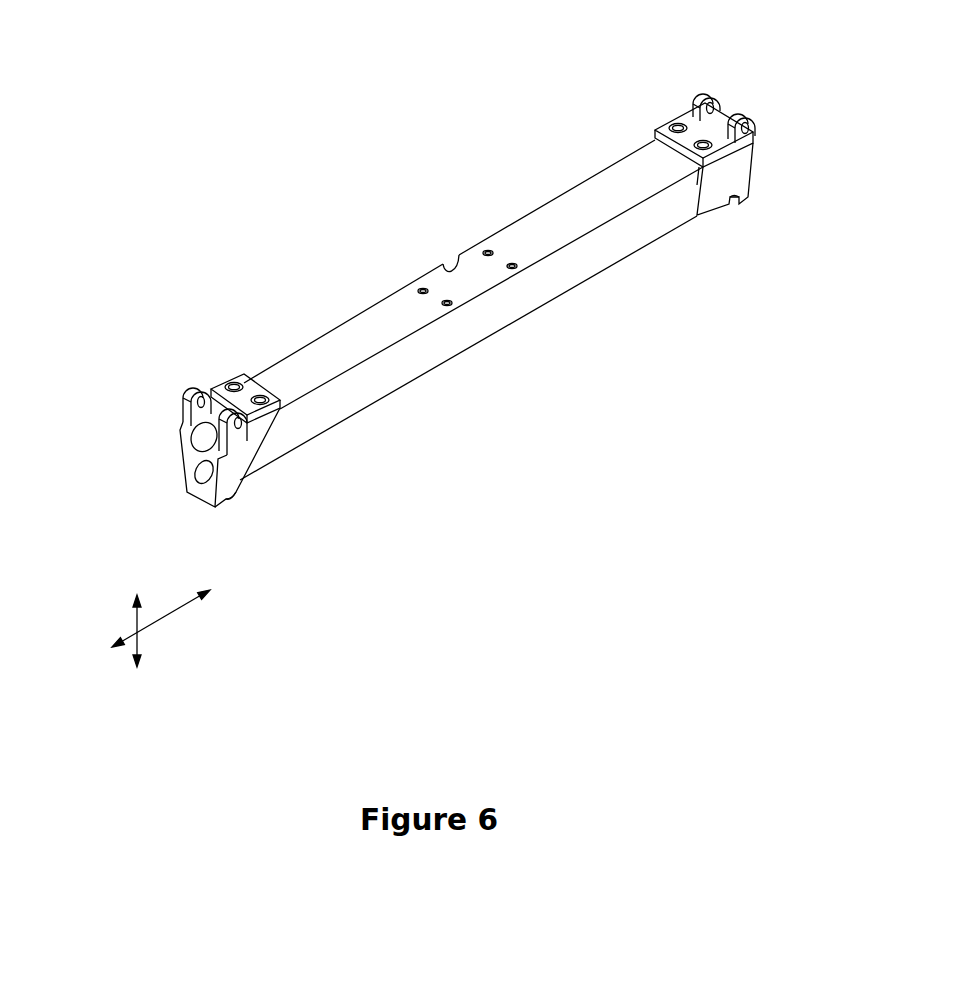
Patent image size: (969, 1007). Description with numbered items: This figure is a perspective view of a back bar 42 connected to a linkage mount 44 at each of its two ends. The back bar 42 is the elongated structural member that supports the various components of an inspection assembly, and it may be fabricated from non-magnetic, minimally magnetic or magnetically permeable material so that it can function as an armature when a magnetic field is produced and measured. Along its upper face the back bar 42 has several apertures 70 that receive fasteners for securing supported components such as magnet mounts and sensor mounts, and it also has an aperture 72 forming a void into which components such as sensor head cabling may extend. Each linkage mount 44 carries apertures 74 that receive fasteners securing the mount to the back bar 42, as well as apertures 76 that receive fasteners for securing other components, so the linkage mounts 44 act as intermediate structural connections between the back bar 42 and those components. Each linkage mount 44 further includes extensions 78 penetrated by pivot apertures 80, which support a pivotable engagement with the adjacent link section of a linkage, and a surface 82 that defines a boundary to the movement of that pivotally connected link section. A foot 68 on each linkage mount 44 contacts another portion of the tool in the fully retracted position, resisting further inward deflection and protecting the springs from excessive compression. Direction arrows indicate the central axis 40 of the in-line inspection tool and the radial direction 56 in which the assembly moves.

The central axis 40 is at (167, 618).
The back bar 42 is at (280, 134).
The linkage mount 44 is at (232, 467).
The radial direction 56 is at (135, 620).
The foot 68 is at (227, 502).
The aperture 70 is at (512, 263).
The aperture 72 is at (440, 262).
The aperture 74 is at (202, 440).
The aperture 76 is at (259, 396).
The extension 78 is at (236, 419).
The pivot aperture 80 is at (242, 430).
The surface 82 is at (205, 411).